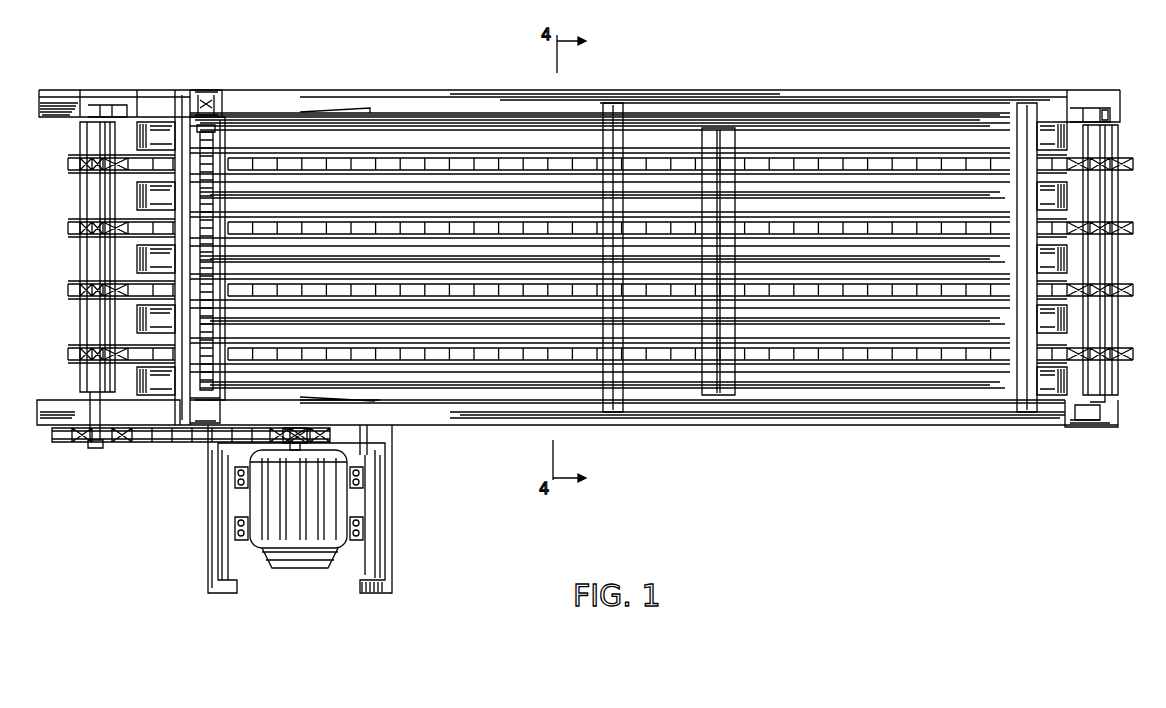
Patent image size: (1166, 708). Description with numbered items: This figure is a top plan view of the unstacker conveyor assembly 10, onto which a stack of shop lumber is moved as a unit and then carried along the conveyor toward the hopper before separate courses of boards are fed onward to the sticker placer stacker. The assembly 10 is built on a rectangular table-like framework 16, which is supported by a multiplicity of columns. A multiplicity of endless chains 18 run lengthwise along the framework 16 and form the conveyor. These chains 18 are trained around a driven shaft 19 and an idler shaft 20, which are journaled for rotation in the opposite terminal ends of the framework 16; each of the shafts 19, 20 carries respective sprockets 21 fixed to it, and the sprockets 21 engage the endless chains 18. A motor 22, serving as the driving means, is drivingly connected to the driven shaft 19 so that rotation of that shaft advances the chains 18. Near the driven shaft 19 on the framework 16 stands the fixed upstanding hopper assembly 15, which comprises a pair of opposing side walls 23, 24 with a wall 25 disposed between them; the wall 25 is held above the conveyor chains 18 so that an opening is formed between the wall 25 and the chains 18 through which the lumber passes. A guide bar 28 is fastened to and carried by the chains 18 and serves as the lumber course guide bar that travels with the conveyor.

The unstacker conveyor assembly 10 is at (681, 413).
The hopper assembly 15 is at (230, 143).
The framework 16 is at (52, 428).
The endless chains 18 is at (800, 172).
The driven shaft 19 is at (80, 379).
The idler shaft 20 is at (1115, 255).
The sprockets 21 is at (68, 164).
The motor 22 is at (350, 508).
The side wall 23 is at (327, 113).
The side wall 24 is at (330, 402).
The wall 25 is at (232, 338).
The guide bar 28 is at (715, 140).